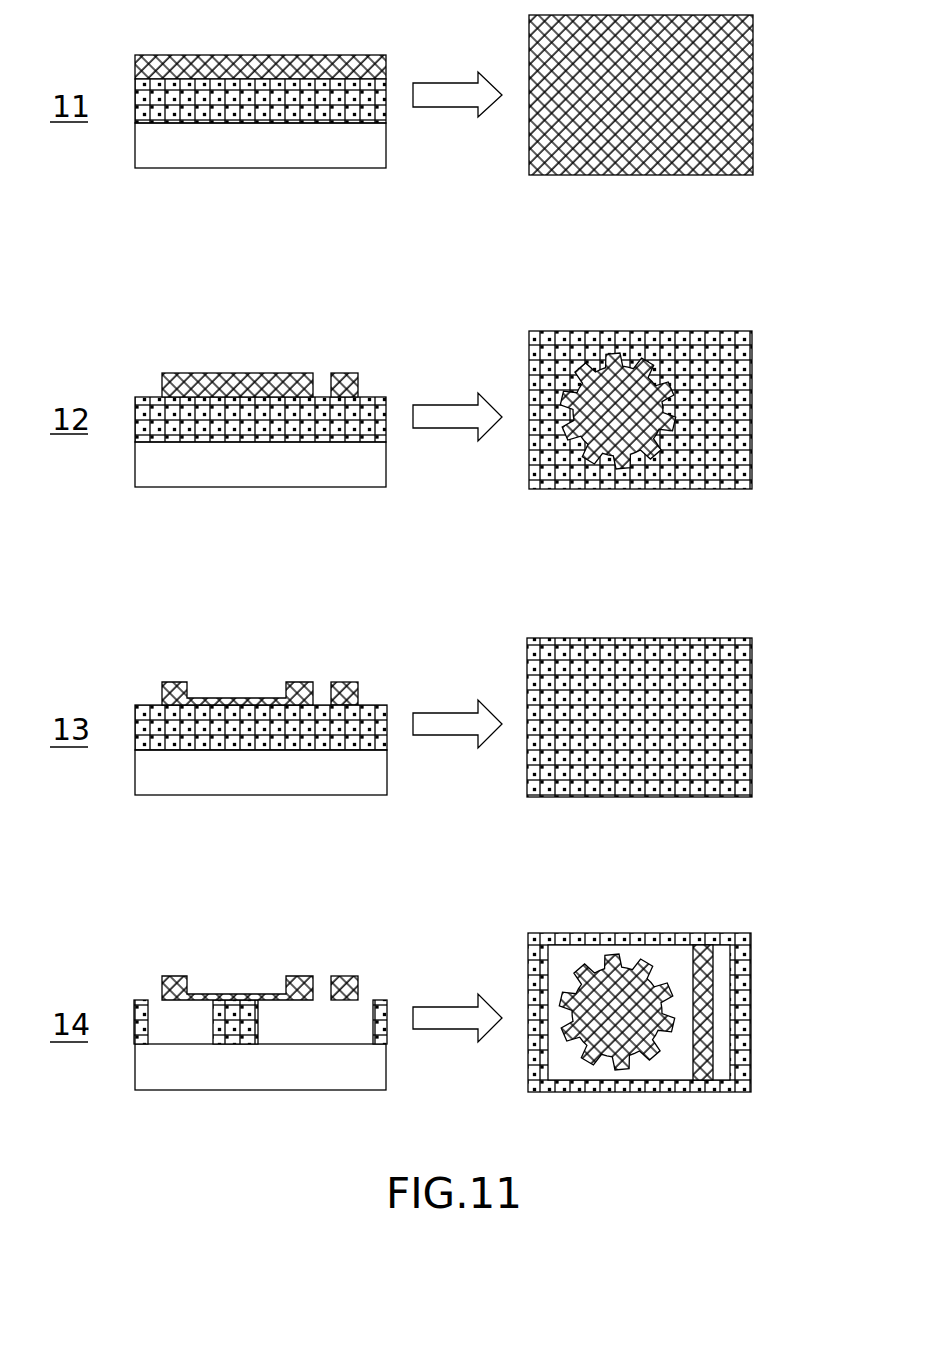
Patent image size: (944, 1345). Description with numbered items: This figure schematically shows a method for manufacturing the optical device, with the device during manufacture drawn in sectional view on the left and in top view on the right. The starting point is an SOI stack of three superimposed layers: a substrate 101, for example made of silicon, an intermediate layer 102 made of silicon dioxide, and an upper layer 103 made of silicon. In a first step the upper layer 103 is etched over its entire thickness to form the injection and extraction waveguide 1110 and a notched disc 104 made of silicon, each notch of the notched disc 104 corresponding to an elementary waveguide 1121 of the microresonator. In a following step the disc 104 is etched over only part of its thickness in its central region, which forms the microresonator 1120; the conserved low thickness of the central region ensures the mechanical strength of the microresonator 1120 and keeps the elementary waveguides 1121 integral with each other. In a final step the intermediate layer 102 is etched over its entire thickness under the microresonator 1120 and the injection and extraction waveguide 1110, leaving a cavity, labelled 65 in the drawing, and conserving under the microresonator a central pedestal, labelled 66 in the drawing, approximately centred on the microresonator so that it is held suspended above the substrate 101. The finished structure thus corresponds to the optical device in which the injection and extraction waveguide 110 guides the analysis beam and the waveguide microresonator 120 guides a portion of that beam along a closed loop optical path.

The substrate 101 is at (378, 153).
The intermediate layer 102 is at (380, 110).
The upper layer 103 is at (387, 67).
The notched disc 104 is at (245, 383).
The injection and extraction waveguide 1110 is at (345, 383).
The elementary waveguide 1121 is at (657, 368).
The microresonator 1120 is at (146, 687).
The waveguide microresonator 120 is at (146, 984).
The axle post 66 is at (238, 1015).
The injection and extraction waveguide 110 is at (708, 980).
The cavity 65 is at (668, 1058).